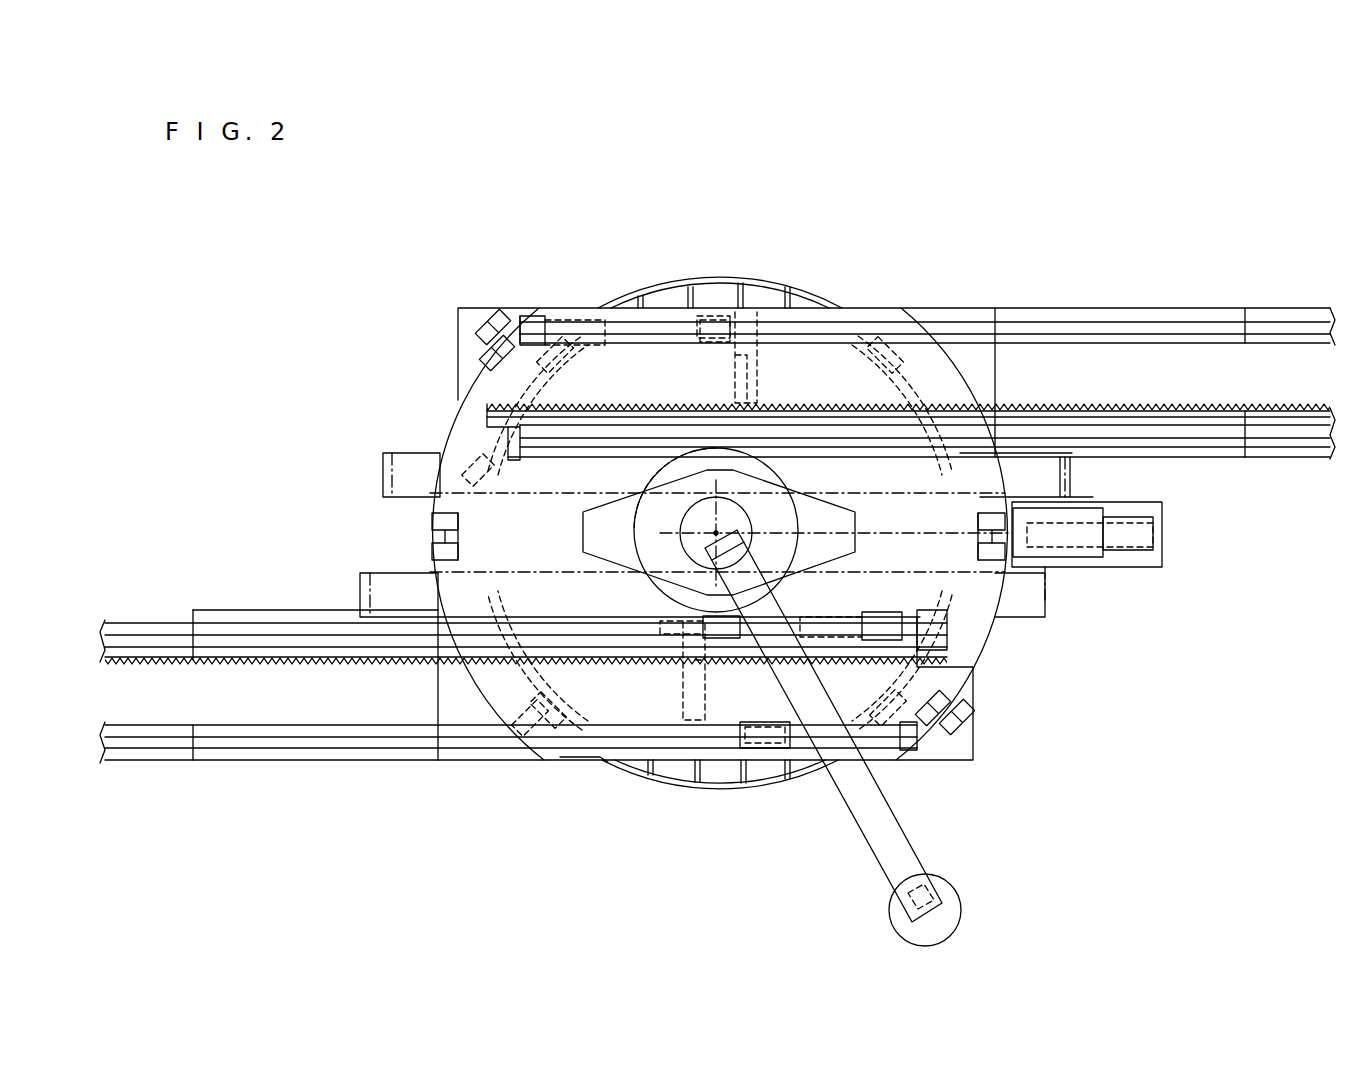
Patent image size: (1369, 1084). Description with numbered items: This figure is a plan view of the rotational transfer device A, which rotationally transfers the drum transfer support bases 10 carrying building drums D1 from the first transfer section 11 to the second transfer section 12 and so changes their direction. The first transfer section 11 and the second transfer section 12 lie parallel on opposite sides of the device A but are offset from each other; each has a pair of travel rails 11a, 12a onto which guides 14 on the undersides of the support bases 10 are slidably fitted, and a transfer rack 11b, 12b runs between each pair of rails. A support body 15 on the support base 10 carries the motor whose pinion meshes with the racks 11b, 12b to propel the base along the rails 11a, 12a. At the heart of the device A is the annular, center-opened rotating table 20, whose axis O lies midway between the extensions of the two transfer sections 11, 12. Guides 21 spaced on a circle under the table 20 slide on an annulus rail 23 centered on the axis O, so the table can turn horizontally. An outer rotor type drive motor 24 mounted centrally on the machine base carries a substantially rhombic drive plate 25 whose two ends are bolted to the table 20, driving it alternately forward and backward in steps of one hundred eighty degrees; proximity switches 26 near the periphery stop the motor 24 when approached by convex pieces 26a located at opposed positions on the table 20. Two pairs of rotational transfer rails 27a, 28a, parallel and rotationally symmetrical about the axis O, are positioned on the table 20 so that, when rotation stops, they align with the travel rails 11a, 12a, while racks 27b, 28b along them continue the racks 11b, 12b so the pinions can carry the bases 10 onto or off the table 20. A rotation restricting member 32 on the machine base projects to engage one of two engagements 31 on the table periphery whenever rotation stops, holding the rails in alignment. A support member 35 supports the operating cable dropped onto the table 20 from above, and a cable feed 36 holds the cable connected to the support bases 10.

The drum transfer support base 10 is at (585, 380).
The first transfer section 11 is at (523, 709).
The travel rail 11a is at (250, 742).
The transfer rack 11b is at (230, 658).
The second transfer section 12 is at (911, 364).
The travel rail 12a is at (1290, 445).
The transfer rack 12b is at (1273, 410).
The guide 14 is at (560, 330).
The support body 15 is at (625, 320).
The rotating table 20 is at (500, 690).
The guide 21 is at (535, 325).
The annulus rail 23 is at (608, 770).
The drive motor 24 is at (530, 722).
The drive plate 25 is at (600, 533).
The proximity switch 26 is at (487, 327).
The convex piece 26a is at (492, 357).
The rotational transfer rail 27a is at (786, 743).
The rack 27b is at (640, 742).
The rotational transfer rail 28a is at (655, 445).
The rack 28b is at (805, 378).
The engagement 31 is at (432, 525).
The rotation restricting member 32 is at (1068, 560).
The support member 35 is at (876, 825).
The cable feed 36 is at (400, 452).
The axis O is at (718, 535).
The building drum D1 is at (985, 385).
The rotational transfer device A is at (905, 250).